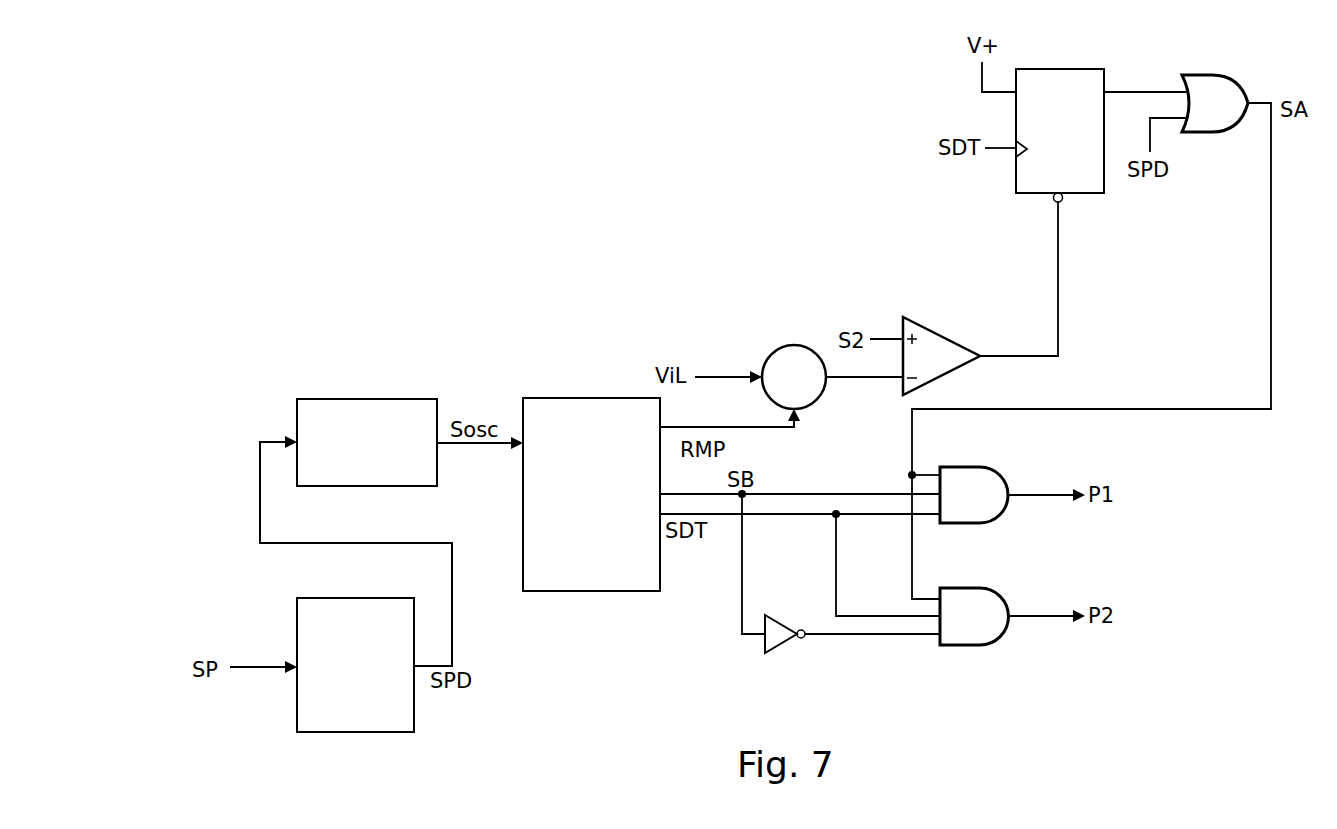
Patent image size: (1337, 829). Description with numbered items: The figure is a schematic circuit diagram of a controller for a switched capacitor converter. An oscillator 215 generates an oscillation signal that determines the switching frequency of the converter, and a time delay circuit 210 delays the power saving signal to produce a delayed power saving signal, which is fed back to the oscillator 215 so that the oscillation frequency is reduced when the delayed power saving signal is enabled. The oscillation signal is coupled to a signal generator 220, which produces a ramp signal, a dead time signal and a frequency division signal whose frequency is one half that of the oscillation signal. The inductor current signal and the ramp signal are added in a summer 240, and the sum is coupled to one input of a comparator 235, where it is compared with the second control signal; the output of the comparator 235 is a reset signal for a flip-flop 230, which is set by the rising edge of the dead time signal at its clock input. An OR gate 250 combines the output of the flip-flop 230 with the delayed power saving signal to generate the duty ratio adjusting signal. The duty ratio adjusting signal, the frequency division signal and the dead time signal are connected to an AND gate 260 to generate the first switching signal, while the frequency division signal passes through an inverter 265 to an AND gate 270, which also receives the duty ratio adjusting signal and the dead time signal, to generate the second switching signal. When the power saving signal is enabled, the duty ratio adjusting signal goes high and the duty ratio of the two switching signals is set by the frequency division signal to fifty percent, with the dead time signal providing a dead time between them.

The time delay circuit 210 is at (337, 722).
The oscillator 215 is at (347, 471).
The signal generator 220 is at (572, 522).
The flip-flop 230 is at (1052, 70).
The comparator 235 is at (938, 330).
The summer 240 is at (777, 345).
The OR gate 250 is at (1213, 72).
The AND gate 260 is at (967, 467).
The inverter 265 is at (778, 645).
The AND gate 270 is at (967, 588).